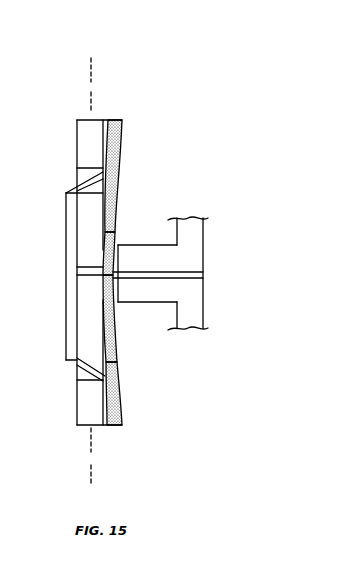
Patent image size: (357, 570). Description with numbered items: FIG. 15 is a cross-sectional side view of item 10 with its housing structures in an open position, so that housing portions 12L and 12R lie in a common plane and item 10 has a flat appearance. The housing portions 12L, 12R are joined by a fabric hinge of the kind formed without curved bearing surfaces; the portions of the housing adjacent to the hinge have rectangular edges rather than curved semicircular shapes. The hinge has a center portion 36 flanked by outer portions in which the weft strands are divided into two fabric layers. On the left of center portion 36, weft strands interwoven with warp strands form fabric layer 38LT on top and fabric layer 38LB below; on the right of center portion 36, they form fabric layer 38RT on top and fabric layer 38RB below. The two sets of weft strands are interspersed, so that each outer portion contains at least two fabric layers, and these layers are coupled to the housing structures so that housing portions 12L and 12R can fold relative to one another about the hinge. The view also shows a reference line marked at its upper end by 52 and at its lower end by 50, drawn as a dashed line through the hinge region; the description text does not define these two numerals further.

The item 10 is at (152, 86).
The housing portion 12R is at (77, 140).
The housing portion 12L is at (77, 396).
The center portion 36 is at (66, 250).
The fabric layer 38LT is at (122, 131).
The fabric layer 38LB is at (118, 157).
The fabric layer 38RT is at (118, 355).
The fabric layer 38RB is at (118, 397).
The lower plane 50 is at (89, 470).
The upper plane 52 is at (88, 72).